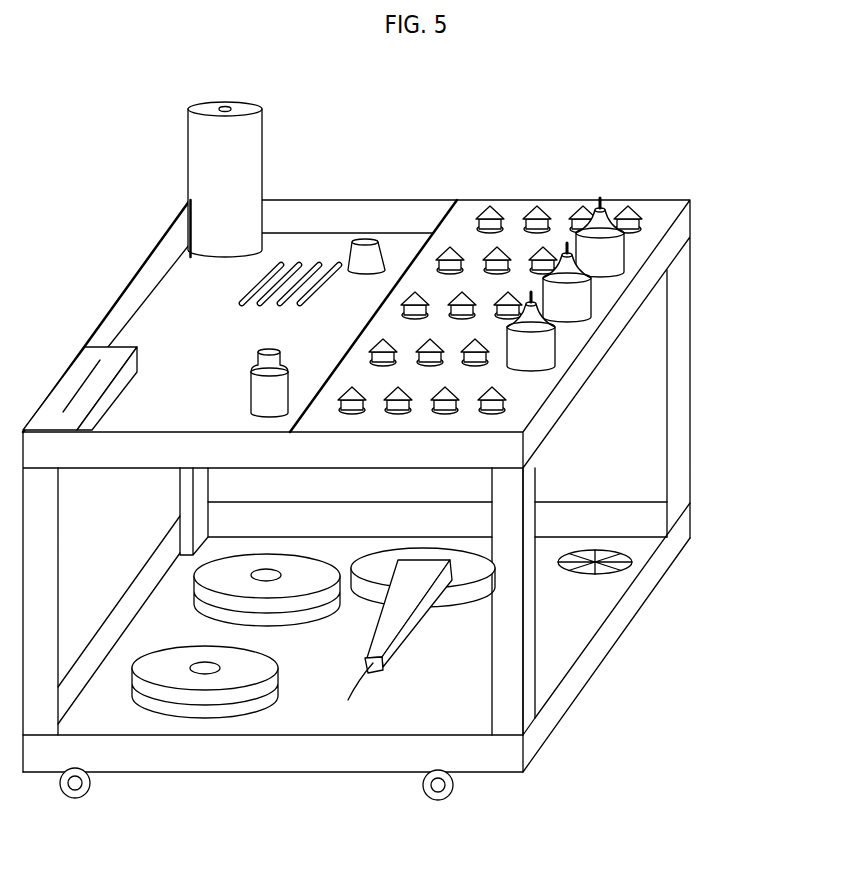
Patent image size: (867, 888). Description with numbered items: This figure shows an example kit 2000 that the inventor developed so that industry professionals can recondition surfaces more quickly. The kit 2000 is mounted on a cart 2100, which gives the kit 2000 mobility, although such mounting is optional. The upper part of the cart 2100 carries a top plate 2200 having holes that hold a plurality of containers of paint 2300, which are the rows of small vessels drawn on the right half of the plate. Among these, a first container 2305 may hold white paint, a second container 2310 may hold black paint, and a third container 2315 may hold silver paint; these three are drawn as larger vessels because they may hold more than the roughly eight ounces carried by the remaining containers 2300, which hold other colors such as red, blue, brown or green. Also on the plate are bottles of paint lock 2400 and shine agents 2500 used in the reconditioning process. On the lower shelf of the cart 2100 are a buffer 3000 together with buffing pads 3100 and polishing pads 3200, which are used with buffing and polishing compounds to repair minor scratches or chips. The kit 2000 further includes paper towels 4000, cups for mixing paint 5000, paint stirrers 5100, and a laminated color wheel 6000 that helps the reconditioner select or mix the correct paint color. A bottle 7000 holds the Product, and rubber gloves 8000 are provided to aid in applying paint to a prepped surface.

The kit 2000 is at (755, 222).
The cart 2100 is at (513, 630).
The top plate 2200 is at (557, 203).
The plurality of containers of paint 2300 is at (516, 177).
The first container 2305 is at (545, 347).
The second container 2310 is at (582, 297).
The third container 2315 is at (615, 253).
The bottles of paint lock 2400 is at (635, 222).
The shine agents 2500 is at (500, 398).
The buffer 3000 is at (410, 608).
The buffing pads 3100 is at (190, 683).
The polishing pads 3200 is at (308, 577).
The paper towels 4000 is at (243, 148).
The cups for mixing paint 5000 is at (367, 252).
The paint stirrers 5100 is at (313, 244).
The laminated color wheel 6000 is at (630, 558).
The bottle 7000 is at (248, 357).
The rubber gloves 8000 is at (110, 357).